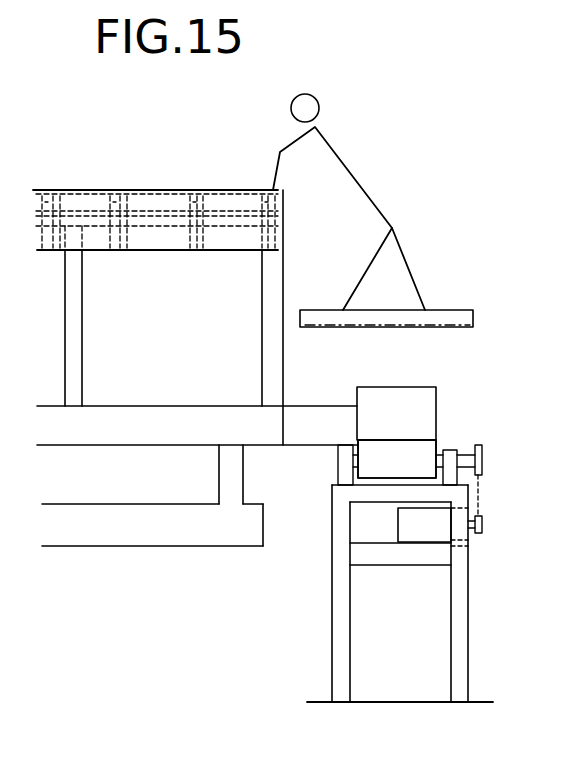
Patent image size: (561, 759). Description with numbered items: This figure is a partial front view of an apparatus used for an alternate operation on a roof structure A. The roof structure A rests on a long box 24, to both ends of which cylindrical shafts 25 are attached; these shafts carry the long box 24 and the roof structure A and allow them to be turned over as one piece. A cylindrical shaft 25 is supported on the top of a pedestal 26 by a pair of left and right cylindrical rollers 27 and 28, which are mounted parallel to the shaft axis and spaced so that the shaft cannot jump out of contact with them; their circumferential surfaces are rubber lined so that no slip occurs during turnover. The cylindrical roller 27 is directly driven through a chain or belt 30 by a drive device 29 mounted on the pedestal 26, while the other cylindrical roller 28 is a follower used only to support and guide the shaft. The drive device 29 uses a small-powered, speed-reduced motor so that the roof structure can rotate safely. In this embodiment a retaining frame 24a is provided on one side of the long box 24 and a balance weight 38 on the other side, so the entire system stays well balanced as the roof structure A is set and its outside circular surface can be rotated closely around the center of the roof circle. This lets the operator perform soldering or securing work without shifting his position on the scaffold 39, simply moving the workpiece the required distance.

The roof structure A is at (148, 188).
The long box 24 is at (161, 413).
The retaining frame 24a is at (76, 319).
The cylindrical shaft 25 is at (412, 394).
The pedestal 26 is at (470, 623).
The cylindrical roller 27 is at (425, 459).
The cylindrical roller 28 is at (434, 442).
The drive device 29 is at (421, 529).
The chain or belt 30 is at (480, 492).
The balance weight 38 is at (146, 547).
The operator platform 39 is at (455, 309).